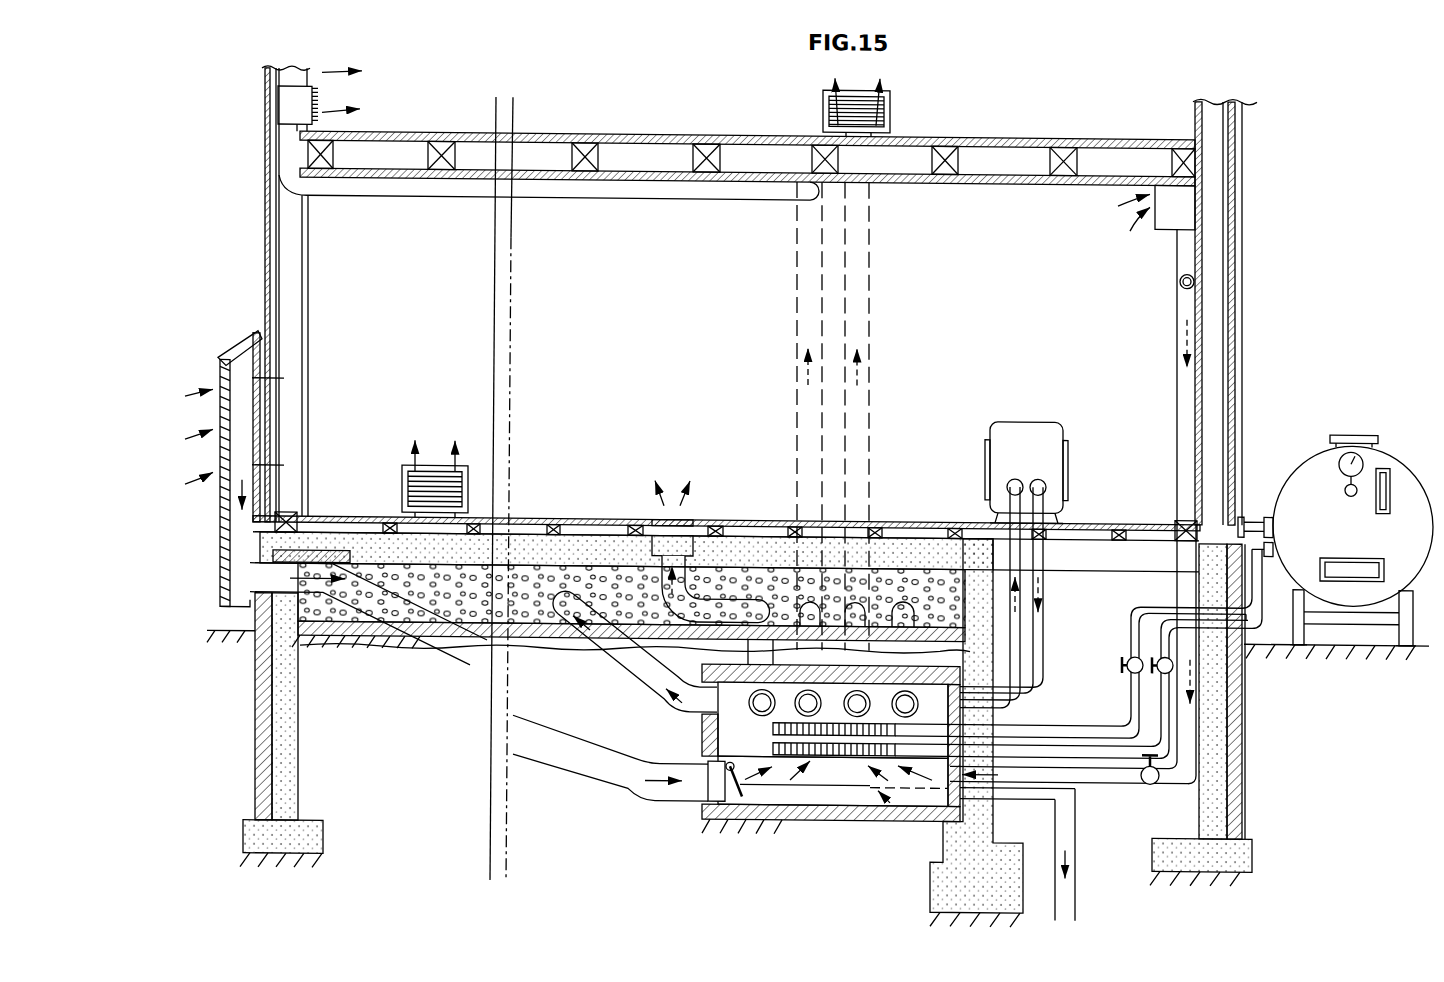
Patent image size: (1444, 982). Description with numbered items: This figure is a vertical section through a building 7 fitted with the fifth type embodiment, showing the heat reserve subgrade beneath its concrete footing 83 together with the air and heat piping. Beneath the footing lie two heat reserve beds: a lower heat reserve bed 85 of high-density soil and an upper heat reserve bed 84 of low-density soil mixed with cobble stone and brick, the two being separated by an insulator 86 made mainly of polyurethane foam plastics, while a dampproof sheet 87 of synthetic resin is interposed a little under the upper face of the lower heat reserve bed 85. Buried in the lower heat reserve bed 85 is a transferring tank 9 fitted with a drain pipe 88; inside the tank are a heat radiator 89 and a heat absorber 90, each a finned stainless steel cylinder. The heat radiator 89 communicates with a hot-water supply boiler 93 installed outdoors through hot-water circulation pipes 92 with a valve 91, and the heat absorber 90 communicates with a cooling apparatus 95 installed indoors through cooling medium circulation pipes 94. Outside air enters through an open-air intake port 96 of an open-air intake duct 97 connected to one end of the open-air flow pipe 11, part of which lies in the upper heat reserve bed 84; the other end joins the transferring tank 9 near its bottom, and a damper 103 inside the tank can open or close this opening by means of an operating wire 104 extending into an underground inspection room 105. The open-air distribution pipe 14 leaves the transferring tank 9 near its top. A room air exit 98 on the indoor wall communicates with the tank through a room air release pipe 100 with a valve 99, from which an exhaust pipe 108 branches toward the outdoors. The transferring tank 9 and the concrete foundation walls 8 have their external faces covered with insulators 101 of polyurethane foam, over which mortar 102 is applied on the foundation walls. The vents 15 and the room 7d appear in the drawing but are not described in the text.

The building 7 is at (262, 218).
The growing chamber 7d is at (676, 317).
The concrete foundation walls 8 is at (266, 780).
The transferring tank 9 is at (862, 758).
The open-air flow pipe 11 is at (455, 634).
The open-air distribution pipe 14 is at (640, 192).
The air vent 15 is at (302, 100).
The concrete footing 83 is at (885, 556).
The gravel layer 84 is at (565, 573).
The lower heat reserve bed 85 is at (420, 773).
The insulator 86 is at (345, 645).
The dampproof sheet 87 is at (395, 645).
The drain pipe 88 is at (1017, 854).
The heat radiator 89 is at (858, 760).
The heat absorber 90 is at (773, 729).
The valve 91 is at (1155, 660).
The hot-water circulation pipes 92 is at (1163, 680).
The hot-water supply boiler 93 is at (1396, 456).
The cooling medium circulation pipes 94 is at (1016, 583).
The cooling apparatus 95 is at (1046, 462).
The open-air intake port 96 is at (220, 455).
The open-air intake duct 97 is at (222, 543).
The room air exit 98 is at (1170, 228).
The valve 99 is at (1142, 780).
The room air release pipe 100 is at (1180, 358).
The insulators 101 is at (257, 740).
The mortar 102 is at (255, 693).
The damper 103 is at (733, 800).
The operating wire 104 is at (853, 787).
The underground inspection room 105 is at (1102, 624).
The exhaust pipe 108 is at (1183, 285).